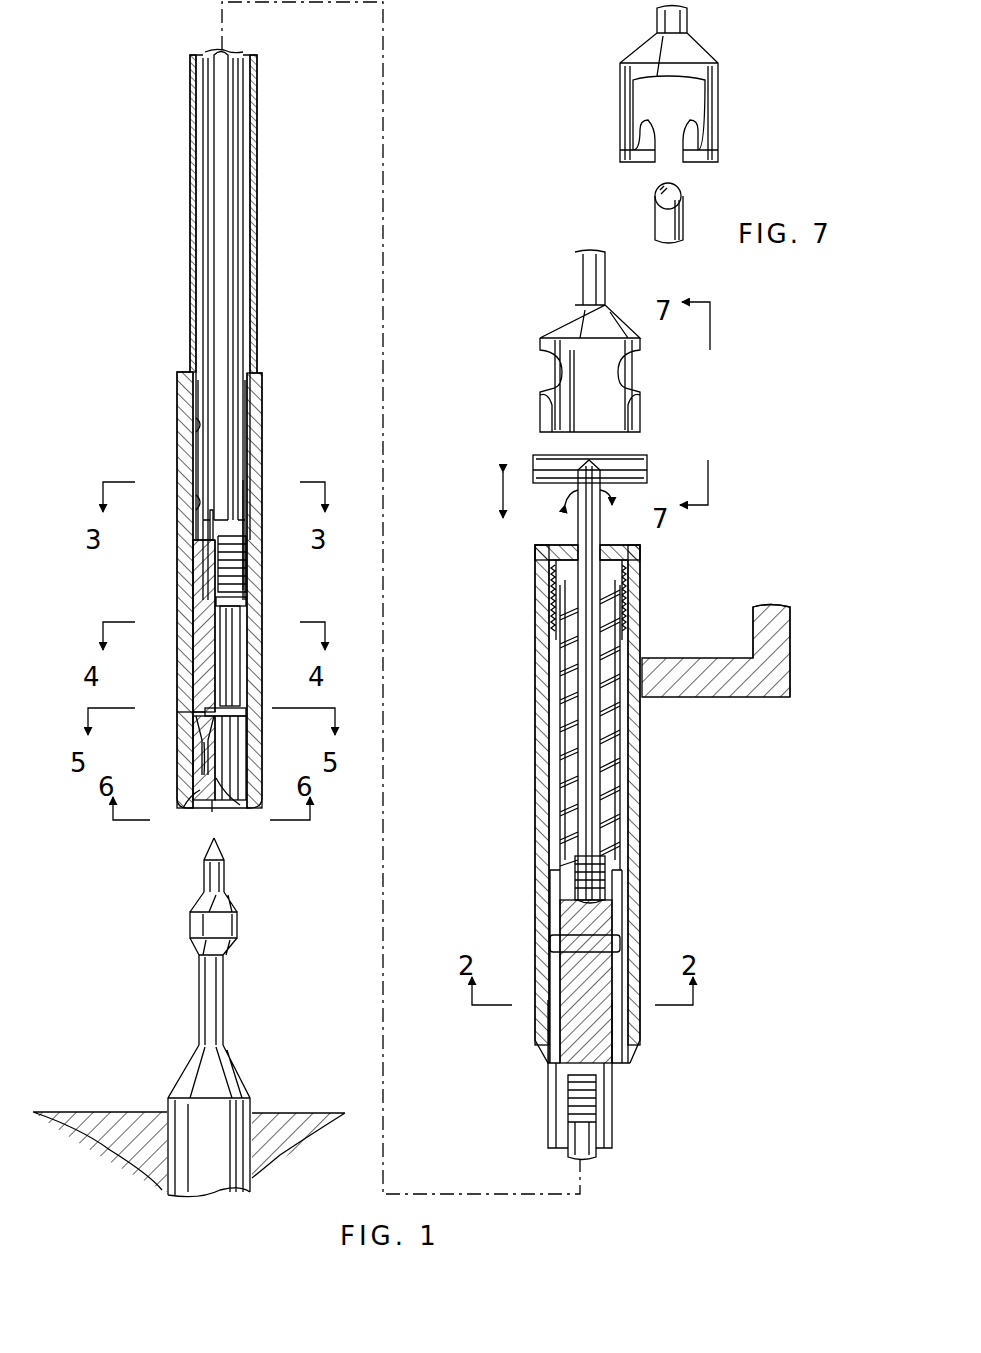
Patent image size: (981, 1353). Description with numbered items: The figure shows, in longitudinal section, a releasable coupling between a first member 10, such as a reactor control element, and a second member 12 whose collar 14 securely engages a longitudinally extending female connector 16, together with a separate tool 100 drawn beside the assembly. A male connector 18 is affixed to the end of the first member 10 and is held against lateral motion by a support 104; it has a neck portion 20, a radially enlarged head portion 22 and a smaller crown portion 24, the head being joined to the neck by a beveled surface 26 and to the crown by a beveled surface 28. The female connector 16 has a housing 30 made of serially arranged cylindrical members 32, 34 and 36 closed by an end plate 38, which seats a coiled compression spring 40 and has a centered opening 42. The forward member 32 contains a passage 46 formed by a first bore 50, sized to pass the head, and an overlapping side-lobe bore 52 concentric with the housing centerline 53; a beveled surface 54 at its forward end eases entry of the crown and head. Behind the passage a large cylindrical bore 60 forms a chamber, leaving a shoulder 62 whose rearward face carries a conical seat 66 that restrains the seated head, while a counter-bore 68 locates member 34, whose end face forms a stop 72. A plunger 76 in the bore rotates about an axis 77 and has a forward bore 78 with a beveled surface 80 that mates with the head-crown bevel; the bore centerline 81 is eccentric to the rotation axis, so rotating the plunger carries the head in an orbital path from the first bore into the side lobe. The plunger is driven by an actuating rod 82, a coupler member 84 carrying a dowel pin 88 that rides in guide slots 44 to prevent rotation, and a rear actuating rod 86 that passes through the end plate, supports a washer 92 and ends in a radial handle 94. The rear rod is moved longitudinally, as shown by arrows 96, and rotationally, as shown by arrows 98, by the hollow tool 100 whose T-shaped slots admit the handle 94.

In FIG. 1, the first member 10 is at (150, 1100).
In FIG. 1, the second member 12 is at (792, 656).
In FIG. 1, the collar 14 is at (640, 705).
In FIG. 1, the female connector 16 is at (146, 344).
In FIG. 1, the male connector 18 is at (184, 968).
In FIG. 1, the neck portion 20 is at (219, 1007).
In FIG. 1, the head portion 22 is at (236, 925).
In FIG. 1, the crown portion 24 is at (223, 870).
In FIG. 1, the beveled surface 26 is at (226, 950).
In FIG. 1, the beveled surface 28 is at (230, 900).
In FIG. 1, the housing 30 is at (175, 392).
In FIG. 1, the cylindrical member 32 is at (258, 430).
In FIG. 1, the cylindrical member 34 is at (192, 148).
In FIG. 1, the cylindrical member 36 is at (634, 830).
In FIG. 1, the end plate 38 is at (640, 572).
In FIG. 1, the coiled compression spring 40 is at (556, 596).
In FIG. 1, the opening 42 is at (577, 542).
In FIG. 1, the guide slots 44 is at (552, 882).
In FIG. 1, the passage 46 is at (236, 748).
In FIG. 1, the first bore 50 is at (230, 810).
In FIG. 1, the second bore 52 is at (204, 748).
In FIG. 1, the centerline 53 is at (212, 810).
In FIG. 1, the beveled surface 54 is at (192, 810).
In FIG. 1, the cylindrical bore 60 is at (200, 500).
In FIG. 1, the shoulder 62 is at (190, 734).
In FIG. 1, the seat 66 is at (179, 718).
In FIG. 1, the counter-bore 68 is at (198, 426).
In FIG. 1, the stop 72 is at (250, 480).
In FIG. 1, the plunger 76 is at (206, 570).
In FIG. 1, the axis of rotation 77 is at (228, 617).
In FIG. 1, the cylindrical bore 78 is at (236, 656).
In FIG. 1, the beveled surface 80 is at (234, 716).
In FIG. 1, the centerline 81 is at (241, 681).
In FIG. 1, the actuating rod 82 is at (222, 91).
In FIG. 1, the coupler member 84 is at (566, 922).
In FIG. 1, the actuating rod 86 is at (614, 782).
In FIG. 7, the actuating rod 86 is at (683, 222).
In FIG. 1, the dowel pin 88 is at (608, 950).
In FIG. 1, the washer 92 is at (618, 863).
In FIG. 1, the handle 94 is at (540, 462).
In FIG. 7, the handle 94 is at (680, 194).
In FIG. 1, the arrows 96 is at (503, 492).
In FIG. 1, the arrows 98 is at (565, 497).
In FIG. 1, the tool 100 is at (565, 320).
In FIG. 7, the tool 100 is at (697, 50).
In FIG. 1, the support 104 is at (276, 1128).